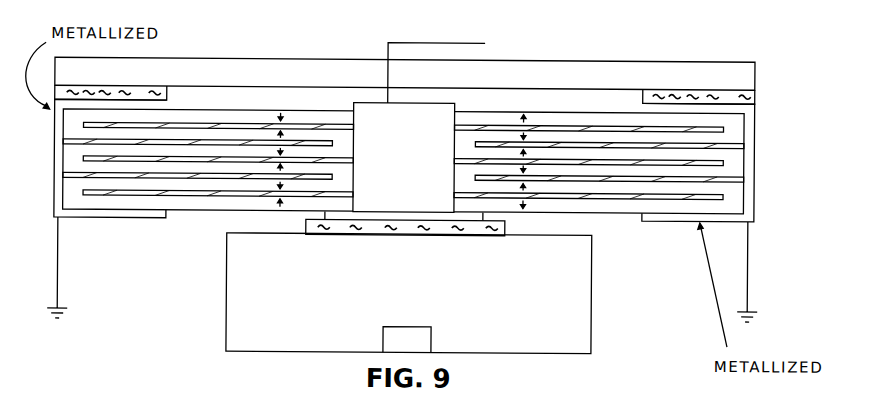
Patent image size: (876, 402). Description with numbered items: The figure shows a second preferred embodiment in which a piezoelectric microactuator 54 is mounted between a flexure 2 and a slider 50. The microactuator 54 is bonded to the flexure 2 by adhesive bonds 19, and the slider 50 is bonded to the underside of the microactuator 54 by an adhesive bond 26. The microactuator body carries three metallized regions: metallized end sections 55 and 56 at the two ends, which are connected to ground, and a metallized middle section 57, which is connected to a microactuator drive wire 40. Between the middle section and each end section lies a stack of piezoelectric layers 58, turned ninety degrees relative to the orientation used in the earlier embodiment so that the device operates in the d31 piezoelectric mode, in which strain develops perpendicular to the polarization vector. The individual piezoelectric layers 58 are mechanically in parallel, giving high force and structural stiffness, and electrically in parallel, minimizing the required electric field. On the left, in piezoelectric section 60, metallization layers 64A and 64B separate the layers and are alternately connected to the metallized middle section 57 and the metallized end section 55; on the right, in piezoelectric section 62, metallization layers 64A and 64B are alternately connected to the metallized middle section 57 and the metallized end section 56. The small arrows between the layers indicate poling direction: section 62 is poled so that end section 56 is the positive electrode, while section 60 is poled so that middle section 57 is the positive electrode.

The flexure 2 is at (708, 60).
The adhesive bonds 19 is at (168, 105).
The adhesive bond 26 is at (507, 232).
The microactuator drive wire 40 is at (443, 41).
The slider 50 is at (592, 297).
The microactuator 54 is at (661, 233).
The metallized end section 55 is at (113, 223).
The metallized end section 56 is at (752, 200).
The metallized middle section 57 is at (443, 102).
The piezoelectric layers 58 is at (72, 170).
The piezoelectric section 60 is at (257, 99).
The piezoelectric section 62 is at (603, 96).
The metallization layers 64A is at (203, 199).
The metallization layers 64B is at (302, 142).